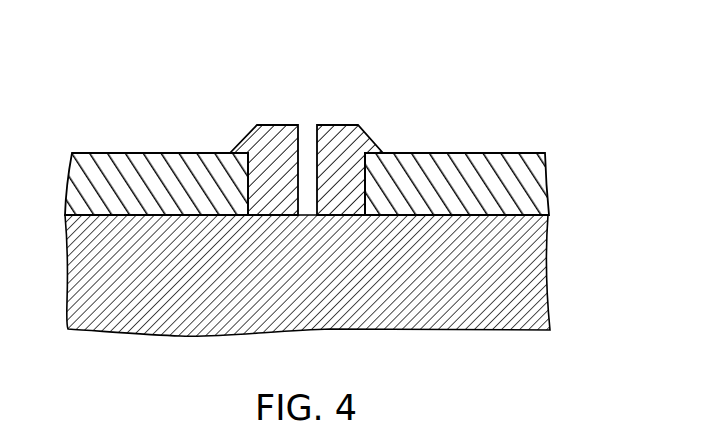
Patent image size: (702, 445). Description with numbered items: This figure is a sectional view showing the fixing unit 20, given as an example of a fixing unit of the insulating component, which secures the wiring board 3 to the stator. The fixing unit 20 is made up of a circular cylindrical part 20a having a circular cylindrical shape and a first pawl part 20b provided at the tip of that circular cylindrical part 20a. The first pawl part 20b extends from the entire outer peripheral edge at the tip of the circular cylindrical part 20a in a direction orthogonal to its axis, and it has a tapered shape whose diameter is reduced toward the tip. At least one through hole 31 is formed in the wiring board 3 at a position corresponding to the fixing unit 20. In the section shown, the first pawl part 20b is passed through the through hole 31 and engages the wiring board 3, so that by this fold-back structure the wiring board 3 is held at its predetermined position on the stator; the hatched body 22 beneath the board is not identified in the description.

The fixing unit 20 is at (306, 115).
The circular cylindrical part 20a is at (352, 182).
The first pawl part 20b is at (276, 145).
The wiring board 3 is at (503, 178).
The through hole 31 is at (366, 168).
The substrate 22 is at (546, 282).